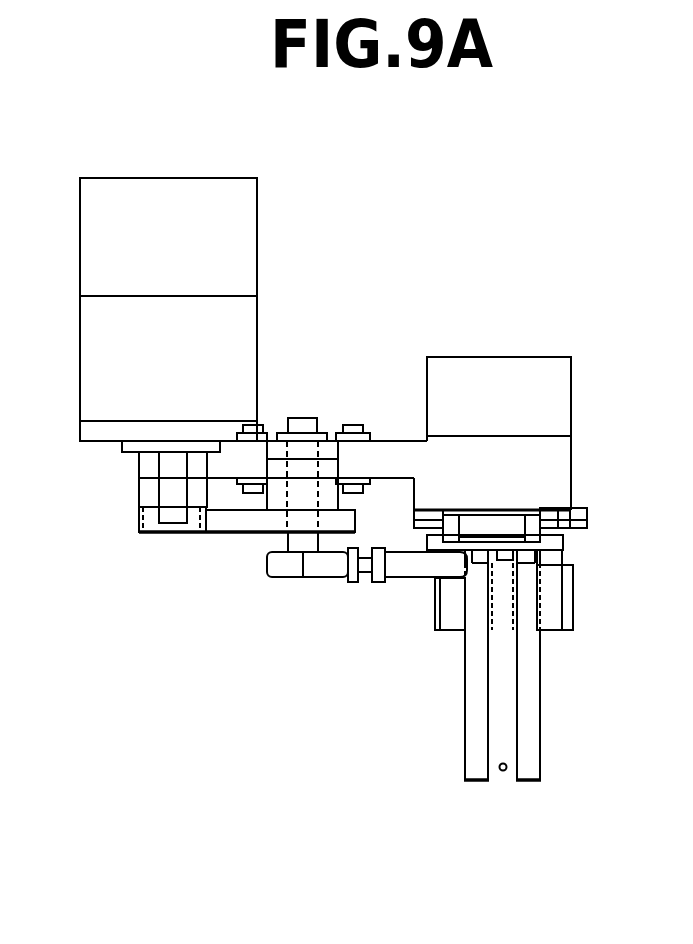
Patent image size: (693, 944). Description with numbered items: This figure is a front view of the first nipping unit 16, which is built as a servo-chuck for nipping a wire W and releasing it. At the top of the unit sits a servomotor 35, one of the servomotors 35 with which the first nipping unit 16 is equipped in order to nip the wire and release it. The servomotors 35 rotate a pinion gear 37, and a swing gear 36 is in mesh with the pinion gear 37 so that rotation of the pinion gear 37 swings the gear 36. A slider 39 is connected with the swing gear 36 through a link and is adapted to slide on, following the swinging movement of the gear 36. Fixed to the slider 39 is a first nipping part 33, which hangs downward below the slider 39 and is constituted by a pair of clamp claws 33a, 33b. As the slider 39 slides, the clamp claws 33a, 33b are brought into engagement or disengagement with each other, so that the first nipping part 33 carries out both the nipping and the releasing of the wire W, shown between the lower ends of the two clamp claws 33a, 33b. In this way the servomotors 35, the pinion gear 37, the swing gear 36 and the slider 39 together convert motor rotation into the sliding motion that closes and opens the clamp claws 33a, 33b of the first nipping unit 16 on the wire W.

The servomotor 35 is at (257, 214).
The first nipping unit 16 is at (487, 334).
The pinion gear 37 is at (138, 523).
The swing gear 36 is at (220, 535).
The slider 39 is at (565, 545).
The first nipping part 33 is at (505, 665).
The clamp claw 33a is at (470, 713).
The clamp claw 33b is at (534, 712).
The wire W is at (503, 771).